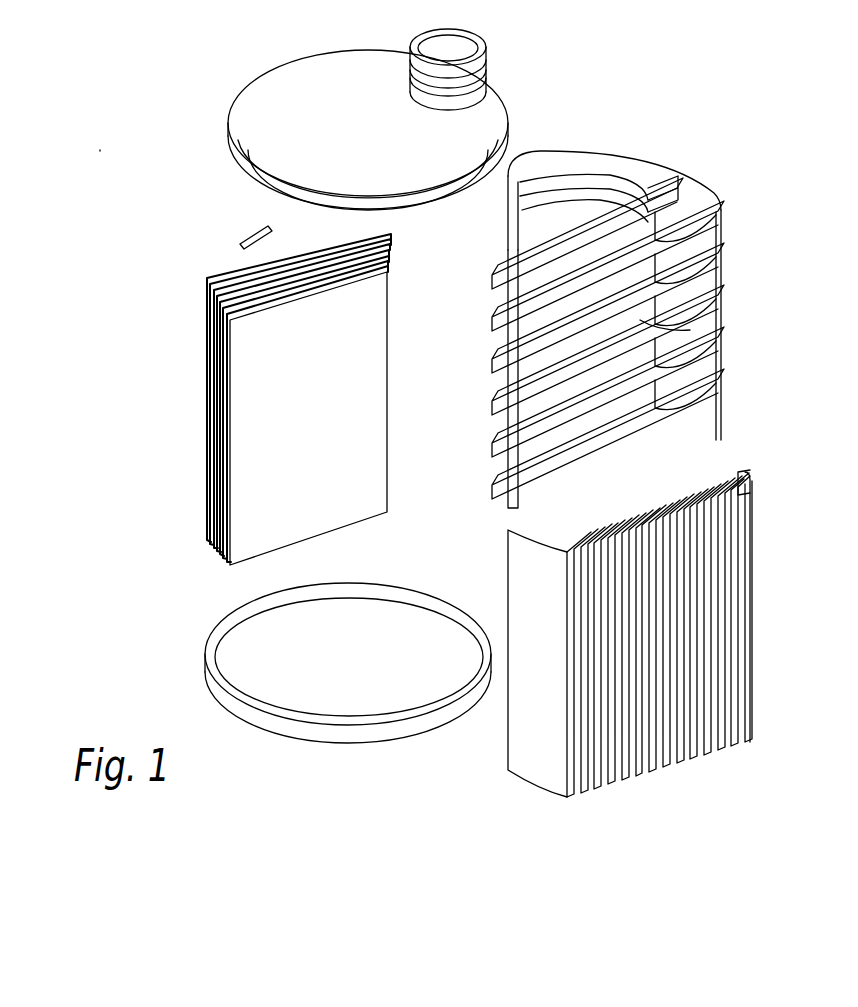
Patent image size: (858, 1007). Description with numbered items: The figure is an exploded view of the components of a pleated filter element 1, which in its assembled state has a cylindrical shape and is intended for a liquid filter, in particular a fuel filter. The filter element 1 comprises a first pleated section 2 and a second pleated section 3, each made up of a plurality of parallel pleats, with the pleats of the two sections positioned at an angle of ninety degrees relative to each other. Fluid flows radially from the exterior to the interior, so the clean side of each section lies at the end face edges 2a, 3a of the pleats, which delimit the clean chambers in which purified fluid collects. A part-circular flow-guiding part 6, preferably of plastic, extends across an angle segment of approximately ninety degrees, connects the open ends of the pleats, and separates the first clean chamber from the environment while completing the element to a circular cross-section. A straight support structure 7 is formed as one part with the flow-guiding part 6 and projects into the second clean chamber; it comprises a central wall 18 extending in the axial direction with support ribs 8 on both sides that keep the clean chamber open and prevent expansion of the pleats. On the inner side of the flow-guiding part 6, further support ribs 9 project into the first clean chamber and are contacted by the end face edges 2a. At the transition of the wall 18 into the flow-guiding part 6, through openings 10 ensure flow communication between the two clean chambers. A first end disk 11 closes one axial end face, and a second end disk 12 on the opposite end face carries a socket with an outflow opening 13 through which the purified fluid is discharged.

The filter element 1 is at (134, 182).
The first pleated section 2 is at (200, 419).
The clean-side end face edges 2a is at (390, 253).
The second pleated section 3 is at (760, 590).
The clean-side end face edges 3a is at (728, 488).
The flow-guiding part 6 is at (660, 165).
The support structure 7 is at (515, 301).
The support ribs 8 is at (495, 494).
The support ribs 9 is at (583, 175).
The through openings 10 is at (695, 290).
The first end disk 11 is at (314, 742).
The second end disk 12 is at (262, 97).
The outflow opening 13 is at (456, 52).
The central wall 18 is at (633, 347).